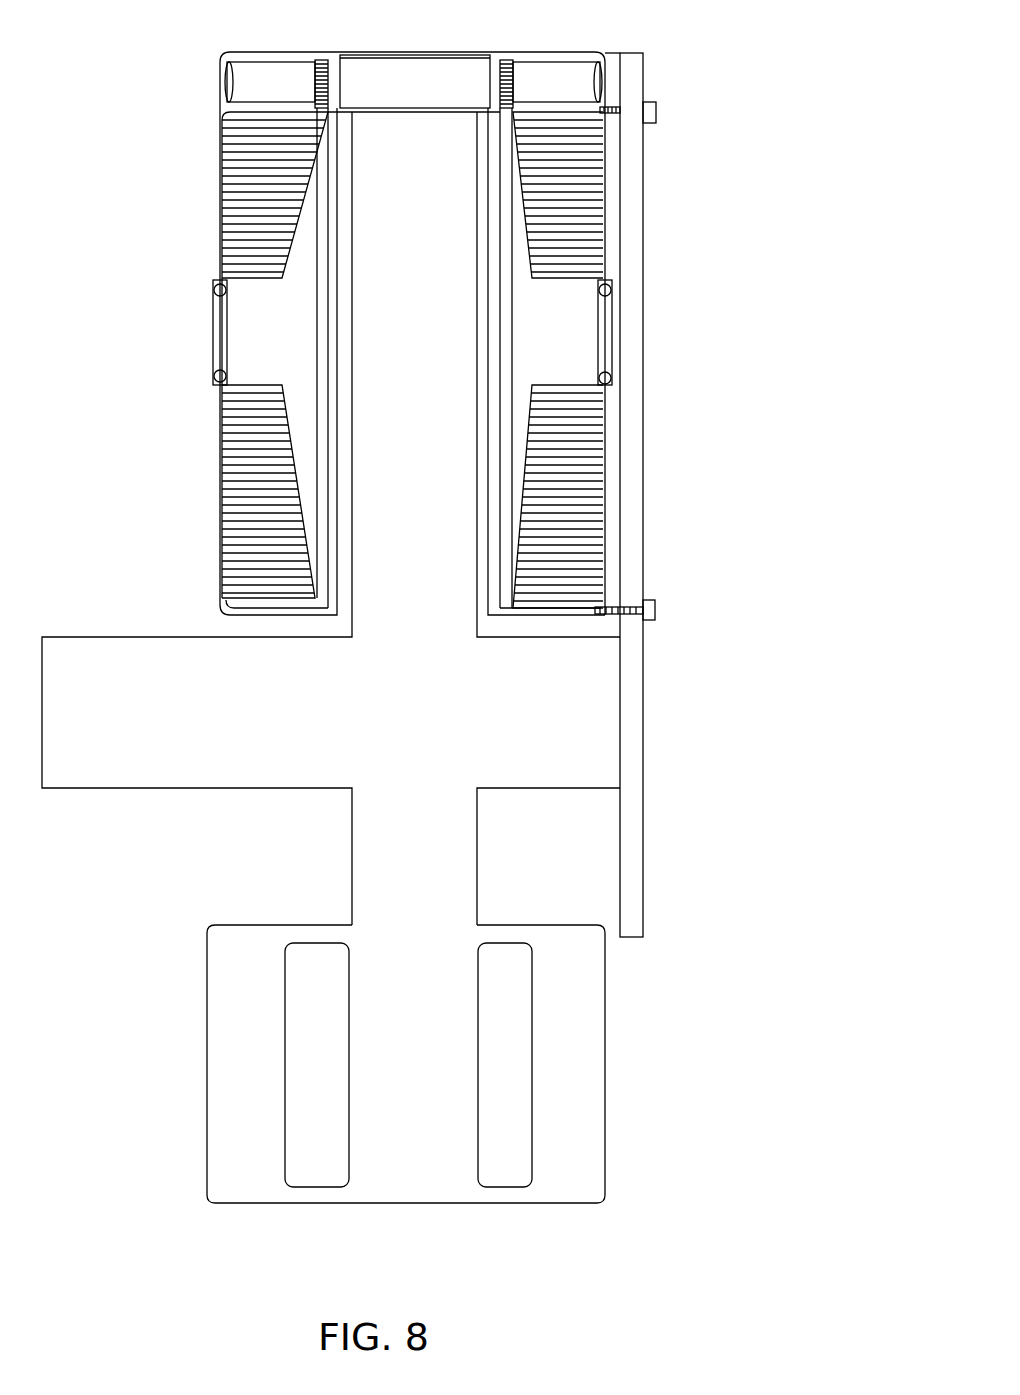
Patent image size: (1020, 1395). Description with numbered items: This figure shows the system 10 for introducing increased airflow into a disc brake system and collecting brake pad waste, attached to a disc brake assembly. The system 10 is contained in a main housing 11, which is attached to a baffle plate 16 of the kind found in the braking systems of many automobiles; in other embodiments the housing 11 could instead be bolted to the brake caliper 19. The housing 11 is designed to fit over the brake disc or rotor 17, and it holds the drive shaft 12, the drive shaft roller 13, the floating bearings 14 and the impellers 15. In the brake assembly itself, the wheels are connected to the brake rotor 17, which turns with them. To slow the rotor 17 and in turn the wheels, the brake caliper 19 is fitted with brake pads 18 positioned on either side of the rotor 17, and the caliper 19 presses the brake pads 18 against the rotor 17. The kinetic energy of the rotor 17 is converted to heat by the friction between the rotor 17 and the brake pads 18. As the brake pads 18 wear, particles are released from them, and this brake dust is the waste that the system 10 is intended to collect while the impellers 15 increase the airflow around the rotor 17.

The system 10 is at (132, 297).
The main housing 11 is at (272, 50).
The drive shaft 12 is at (561, 78).
The drive shaft roller 13 is at (431, 75).
The floating bearings 14 is at (608, 85).
The impellers 15 is at (565, 221).
The baffle plate 16 is at (650, 493).
The brake rotor 17 is at (430, 788).
The brake pads 18 is at (316, 1084).
The brake caliper 19 is at (582, 1148).